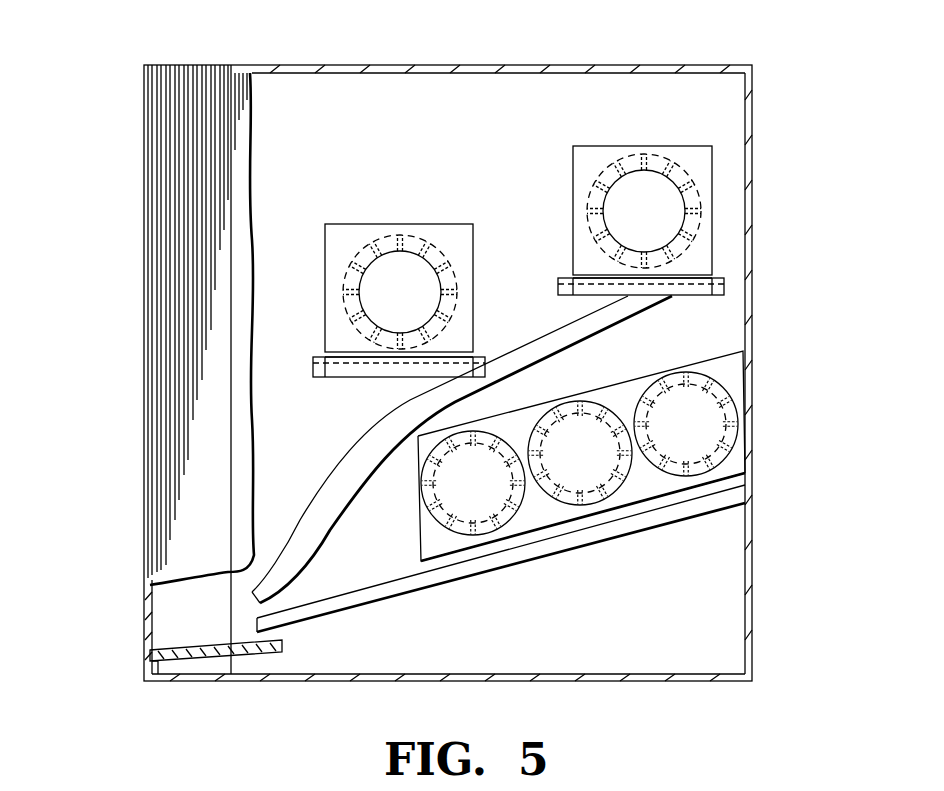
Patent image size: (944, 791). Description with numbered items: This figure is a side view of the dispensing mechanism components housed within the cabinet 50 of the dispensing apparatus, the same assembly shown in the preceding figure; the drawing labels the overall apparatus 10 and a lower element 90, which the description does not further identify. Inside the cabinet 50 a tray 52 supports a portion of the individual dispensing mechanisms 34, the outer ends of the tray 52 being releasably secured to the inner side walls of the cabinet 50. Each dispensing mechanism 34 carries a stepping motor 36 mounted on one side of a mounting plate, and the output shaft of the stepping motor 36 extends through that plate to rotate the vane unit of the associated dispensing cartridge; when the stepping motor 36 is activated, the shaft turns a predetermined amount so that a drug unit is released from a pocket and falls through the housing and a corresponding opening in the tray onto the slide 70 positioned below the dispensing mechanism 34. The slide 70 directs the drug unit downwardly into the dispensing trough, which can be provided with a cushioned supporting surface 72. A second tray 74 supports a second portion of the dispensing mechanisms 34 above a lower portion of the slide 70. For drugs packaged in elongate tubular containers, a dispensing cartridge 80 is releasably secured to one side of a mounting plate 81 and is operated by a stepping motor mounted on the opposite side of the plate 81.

The sheet material processing apparatus 10 is at (138, 234).
The dispensing mechanism 34 is at (374, 216).
The stepping motor 36 is at (426, 290).
The cabinet 50 is at (566, 57).
The tray 52 is at (693, 291).
The slide 70 is at (585, 322).
The cushioned supporting surface 72 is at (178, 640).
The second tray 74 is at (345, 375).
The dispensing cartridge 80 is at (472, 534).
The mounting plate 81 is at (546, 516).
The baffle plate 90 is at (347, 605).